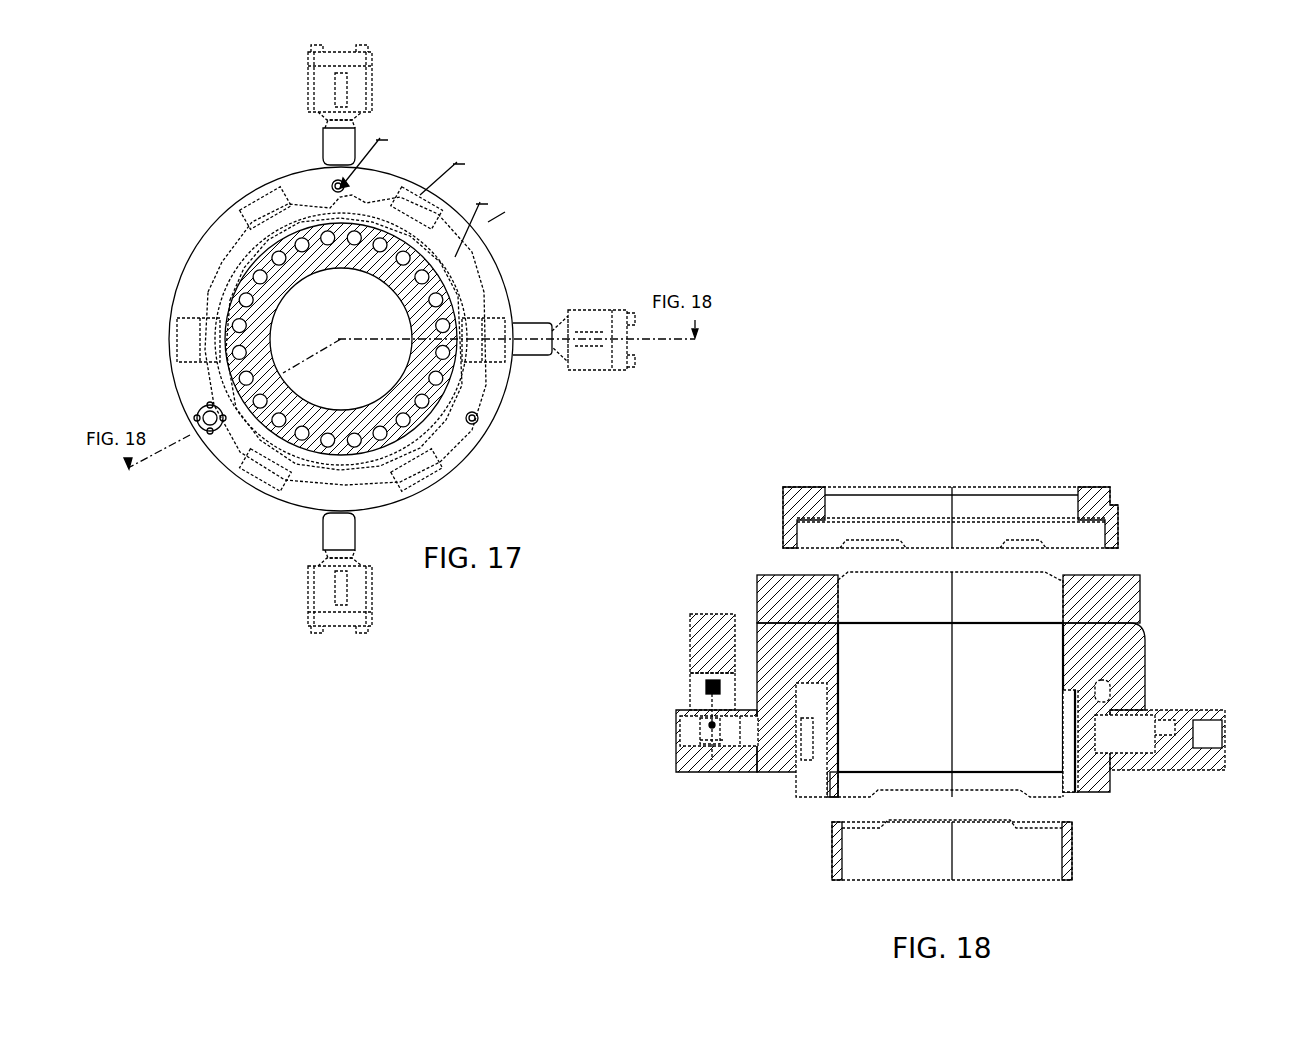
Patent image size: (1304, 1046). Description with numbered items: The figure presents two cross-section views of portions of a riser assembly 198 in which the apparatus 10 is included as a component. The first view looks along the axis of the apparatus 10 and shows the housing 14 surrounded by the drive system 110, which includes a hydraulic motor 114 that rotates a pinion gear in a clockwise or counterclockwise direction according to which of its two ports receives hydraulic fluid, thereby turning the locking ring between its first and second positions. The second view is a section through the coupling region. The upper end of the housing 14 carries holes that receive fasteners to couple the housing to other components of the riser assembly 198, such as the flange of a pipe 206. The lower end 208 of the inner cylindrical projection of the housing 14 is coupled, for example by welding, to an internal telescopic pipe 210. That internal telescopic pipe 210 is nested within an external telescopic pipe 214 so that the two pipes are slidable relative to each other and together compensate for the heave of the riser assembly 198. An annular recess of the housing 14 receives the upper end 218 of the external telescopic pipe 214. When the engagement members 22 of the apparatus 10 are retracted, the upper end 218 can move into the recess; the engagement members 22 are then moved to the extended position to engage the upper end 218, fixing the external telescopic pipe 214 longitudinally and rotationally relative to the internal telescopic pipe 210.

The apparatus 10 is at (1230, 661).
The housing 14 is at (1147, 665).
The engagement member 22 is at (1118, 757).
The drive system 110 is at (676, 648).
The hydraulic motor 114 is at (705, 612).
The riser assembly 198 is at (675, 528).
The pipe 206 is at (1138, 598).
The lower end 208 is at (828, 780).
The internal telescopic pipe 210 is at (832, 845).
The external telescopic pipe 214 is at (795, 785).
The upper end 218 is at (1068, 738).